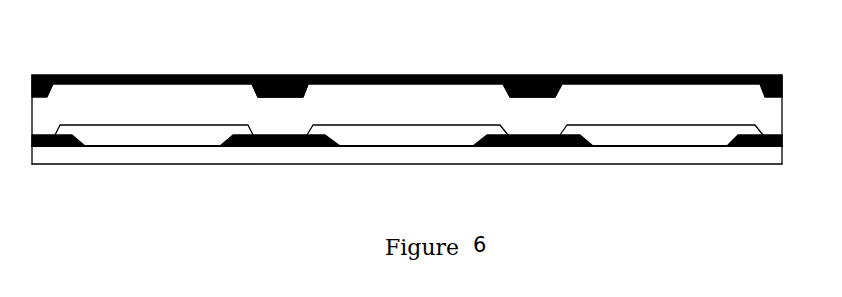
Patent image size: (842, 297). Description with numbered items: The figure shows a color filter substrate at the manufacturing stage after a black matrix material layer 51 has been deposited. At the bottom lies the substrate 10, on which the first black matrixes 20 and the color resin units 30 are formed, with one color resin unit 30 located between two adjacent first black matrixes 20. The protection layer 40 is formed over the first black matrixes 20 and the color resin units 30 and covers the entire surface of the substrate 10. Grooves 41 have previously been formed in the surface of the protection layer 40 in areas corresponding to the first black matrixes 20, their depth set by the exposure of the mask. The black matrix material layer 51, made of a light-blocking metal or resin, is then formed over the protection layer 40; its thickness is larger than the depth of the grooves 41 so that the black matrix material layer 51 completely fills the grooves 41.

The substrate 10 is at (407, 152).
The first black matrixes 20 is at (407, 182).
The color resin units 30 is at (409, 177).
The protection layer 40 is at (407, 152).
The groove 41 is at (251, 52).
The black matrix material layer 51 is at (527, 52).